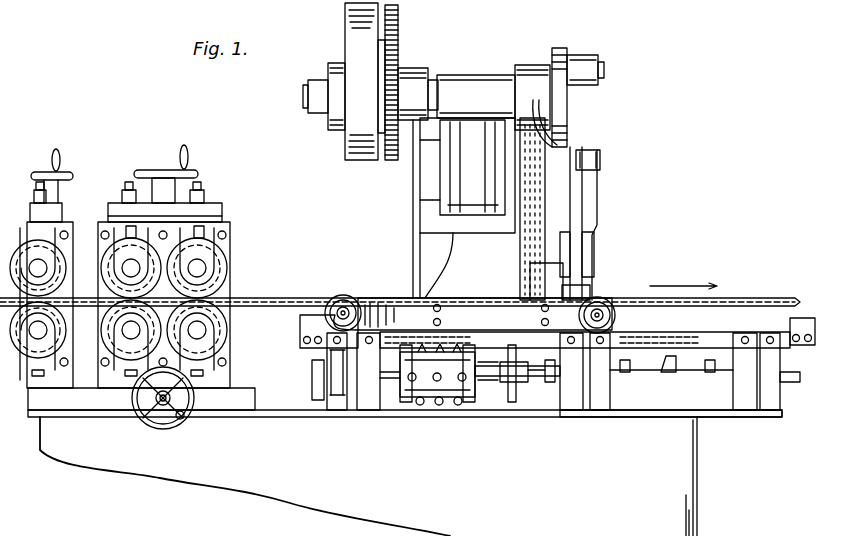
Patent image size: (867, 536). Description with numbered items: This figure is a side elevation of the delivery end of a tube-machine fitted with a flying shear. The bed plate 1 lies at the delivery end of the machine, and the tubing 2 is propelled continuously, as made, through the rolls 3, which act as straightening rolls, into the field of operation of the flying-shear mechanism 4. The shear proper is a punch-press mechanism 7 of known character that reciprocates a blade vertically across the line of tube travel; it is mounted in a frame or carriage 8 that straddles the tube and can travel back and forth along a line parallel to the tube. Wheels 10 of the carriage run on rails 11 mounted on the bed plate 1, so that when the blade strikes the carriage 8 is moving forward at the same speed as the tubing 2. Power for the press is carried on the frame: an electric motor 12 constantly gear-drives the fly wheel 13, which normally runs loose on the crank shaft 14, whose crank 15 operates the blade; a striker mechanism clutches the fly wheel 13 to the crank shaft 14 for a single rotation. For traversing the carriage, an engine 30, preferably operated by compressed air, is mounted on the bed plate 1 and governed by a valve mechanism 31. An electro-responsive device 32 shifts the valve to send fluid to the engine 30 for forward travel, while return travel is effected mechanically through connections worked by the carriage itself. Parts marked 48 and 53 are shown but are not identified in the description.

The bed plate 1 is at (710, 510).
The tubing 2 is at (284, 295).
The rolls 3 is at (233, 256).
The flying-shear mechanism 4 is at (619, 229).
The punch-press mechanism 7 is at (574, 44).
The frame or carriage 8 is at (589, 158).
The wheels 10 is at (343, 300).
The rails 11 is at (414, 231).
The electric motor 12 is at (446, 186).
The fly wheel 13 is at (351, 146).
The crank shaft 14 is at (308, 104).
The crank 15 is at (603, 64).
The engine 30 is at (490, 386).
The valve mechanism 31 is at (437, 394).
The electro-responsive device 32 is at (344, 392).
The stop rod 48 is at (792, 380).
The stop dog 53 is at (680, 361).